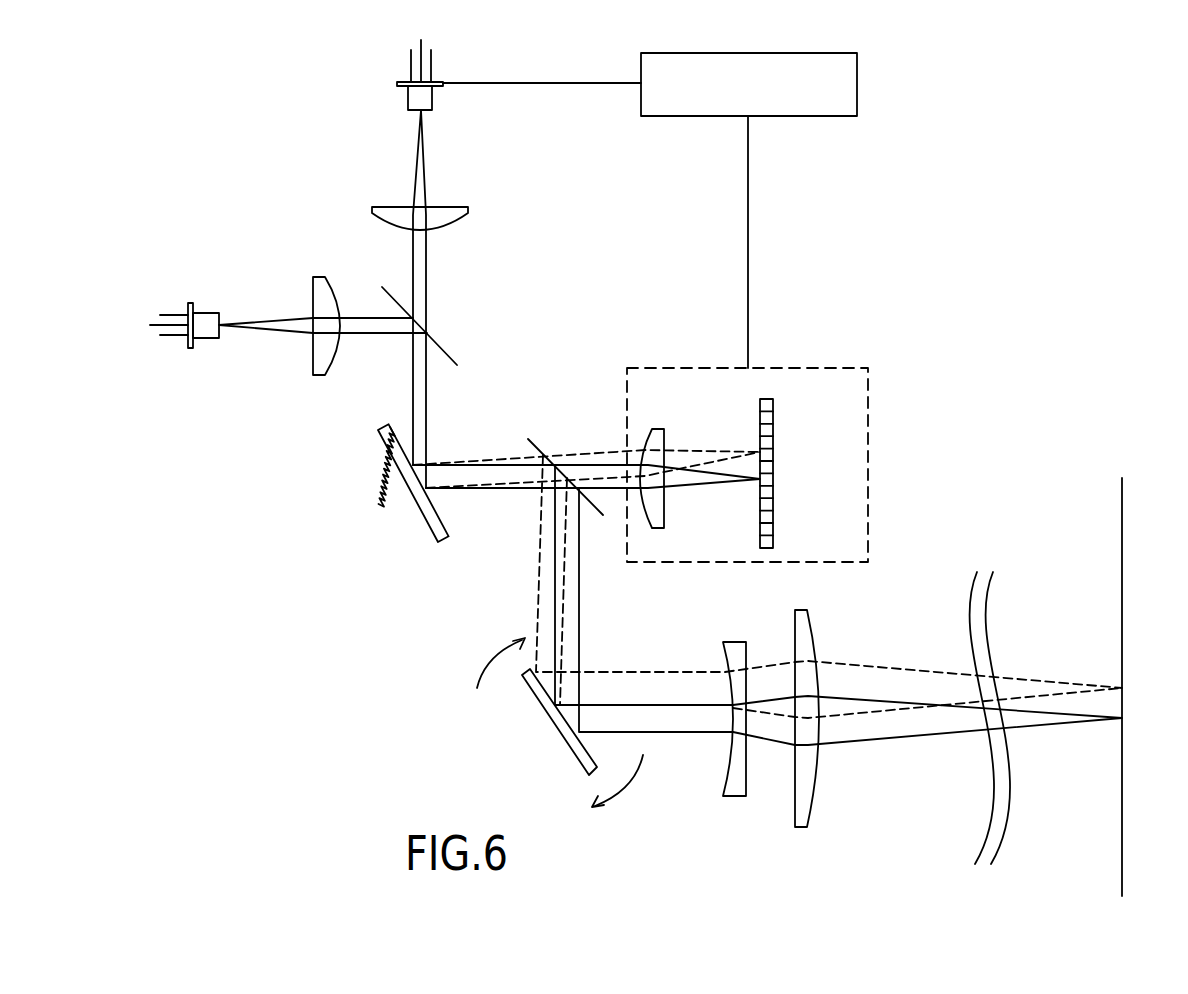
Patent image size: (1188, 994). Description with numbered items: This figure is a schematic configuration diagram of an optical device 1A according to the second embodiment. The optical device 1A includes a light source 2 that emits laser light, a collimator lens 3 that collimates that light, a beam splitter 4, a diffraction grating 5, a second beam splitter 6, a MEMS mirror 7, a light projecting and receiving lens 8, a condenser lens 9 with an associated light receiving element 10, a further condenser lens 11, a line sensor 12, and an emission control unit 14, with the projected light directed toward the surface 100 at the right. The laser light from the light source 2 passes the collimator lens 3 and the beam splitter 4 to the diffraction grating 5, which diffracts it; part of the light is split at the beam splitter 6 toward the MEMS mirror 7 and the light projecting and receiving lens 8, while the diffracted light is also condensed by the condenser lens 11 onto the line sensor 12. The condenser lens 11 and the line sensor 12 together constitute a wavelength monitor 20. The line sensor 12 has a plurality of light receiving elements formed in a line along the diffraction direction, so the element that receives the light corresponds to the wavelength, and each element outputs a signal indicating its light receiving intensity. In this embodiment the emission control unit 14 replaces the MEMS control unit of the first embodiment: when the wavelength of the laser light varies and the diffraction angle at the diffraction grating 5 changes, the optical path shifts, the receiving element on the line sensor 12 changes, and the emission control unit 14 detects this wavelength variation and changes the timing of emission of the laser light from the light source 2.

The optical device 1A is at (1031, 199).
The light source 2 is at (432, 97).
The collimator lens 3 is at (468, 210).
The beam splitter 4 is at (447, 352).
The diffraction grating 5 is at (416, 495).
The beam splitter 6 is at (545, 455).
The MEMS mirror 7 is at (572, 755).
The light projecting and receiving lens 8 is at (813, 608).
The condenser lens 9 is at (318, 277).
The light receiving element 10 is at (202, 313).
The condenser lens 11 is at (657, 429).
The line sensor 12 is at (773, 420).
The emission control unit 14 is at (857, 83).
The wavelength monitor 20 is at (868, 398).
The projection surface 100 is at (1122, 492).